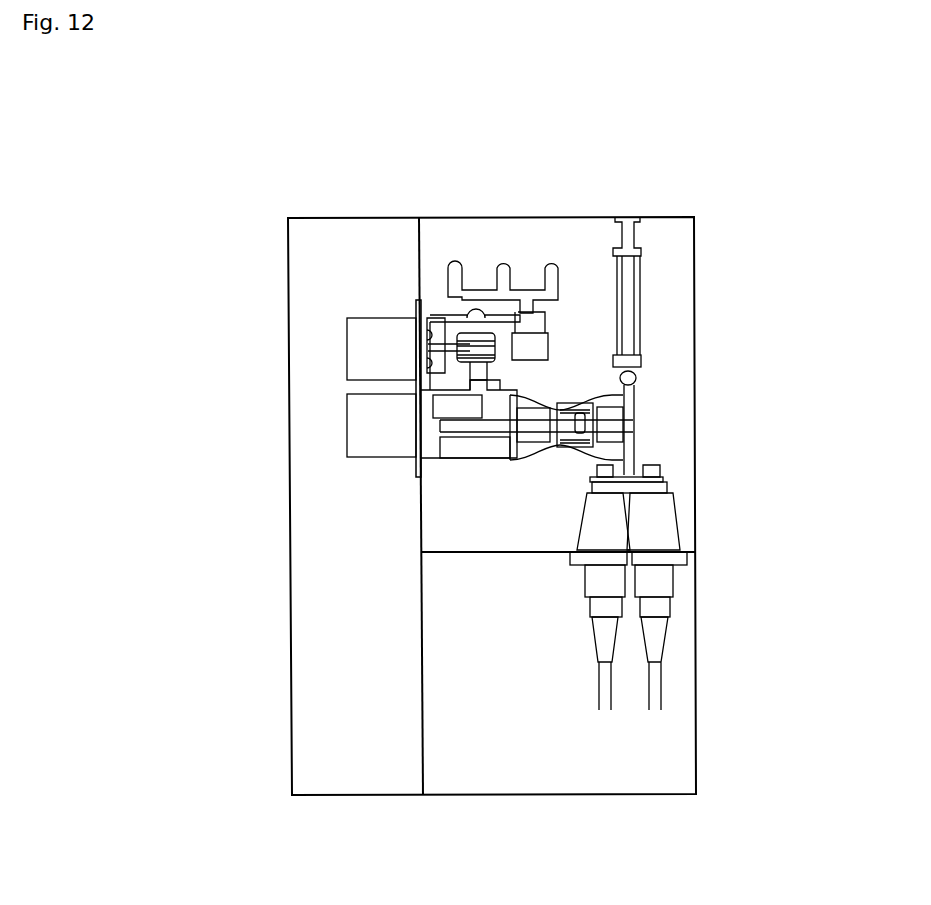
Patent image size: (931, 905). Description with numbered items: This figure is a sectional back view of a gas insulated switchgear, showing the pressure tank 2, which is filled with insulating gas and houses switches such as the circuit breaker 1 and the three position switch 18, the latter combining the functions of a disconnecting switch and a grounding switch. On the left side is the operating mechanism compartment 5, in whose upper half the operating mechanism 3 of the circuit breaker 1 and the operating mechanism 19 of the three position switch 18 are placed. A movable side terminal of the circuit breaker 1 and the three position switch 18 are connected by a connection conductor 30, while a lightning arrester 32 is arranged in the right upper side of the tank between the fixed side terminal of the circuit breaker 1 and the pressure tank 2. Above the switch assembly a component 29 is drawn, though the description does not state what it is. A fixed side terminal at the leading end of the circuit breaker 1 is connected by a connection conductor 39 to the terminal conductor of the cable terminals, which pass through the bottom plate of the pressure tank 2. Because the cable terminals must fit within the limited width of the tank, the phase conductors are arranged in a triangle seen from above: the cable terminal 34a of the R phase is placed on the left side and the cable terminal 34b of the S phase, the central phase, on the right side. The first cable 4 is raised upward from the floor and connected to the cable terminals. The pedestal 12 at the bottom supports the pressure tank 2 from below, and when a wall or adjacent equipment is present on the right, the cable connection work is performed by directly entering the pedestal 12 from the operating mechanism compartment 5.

The circuit breaker 1 is at (453, 462).
The pressure tank 2 is at (682, 218).
The operating mechanism 3 is at (355, 430).
The first cable 4 is at (663, 686).
The operating mechanism compartment 5 is at (312, 219).
The pedestal 12 is at (698, 757).
The three position switch 18 is at (435, 300).
The operating mechanism 19 is at (360, 342).
The valve manifold 29 is at (455, 258).
The connection conductor 30 is at (488, 378).
The lightning arrester 32 is at (640, 310).
The connection conductor 39 is at (640, 455).
The cable terminal 34a is at (630, 518).
The cable terminal 34b is at (680, 513).